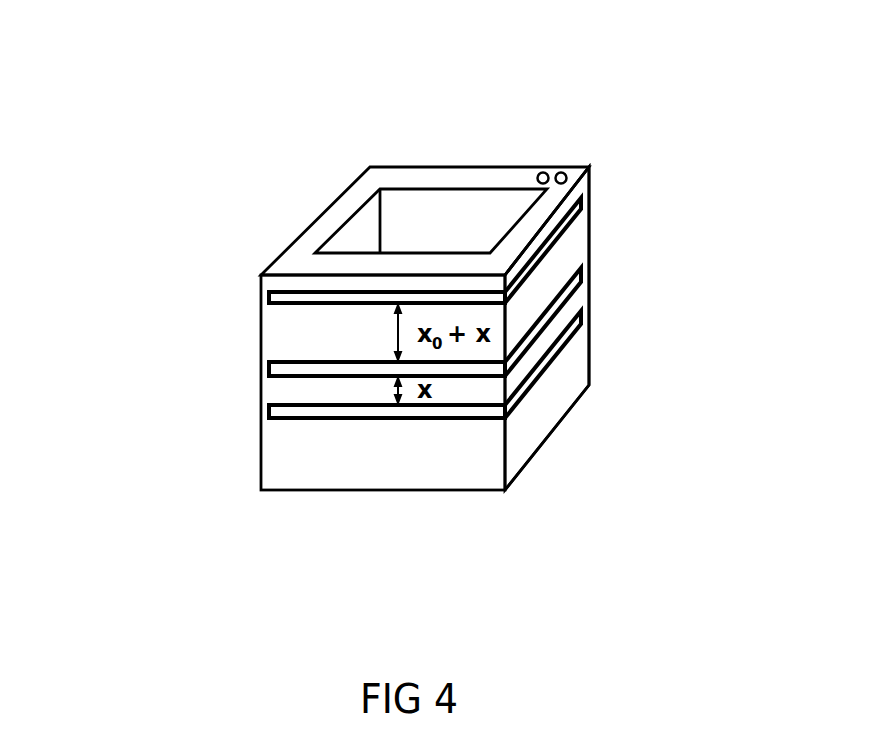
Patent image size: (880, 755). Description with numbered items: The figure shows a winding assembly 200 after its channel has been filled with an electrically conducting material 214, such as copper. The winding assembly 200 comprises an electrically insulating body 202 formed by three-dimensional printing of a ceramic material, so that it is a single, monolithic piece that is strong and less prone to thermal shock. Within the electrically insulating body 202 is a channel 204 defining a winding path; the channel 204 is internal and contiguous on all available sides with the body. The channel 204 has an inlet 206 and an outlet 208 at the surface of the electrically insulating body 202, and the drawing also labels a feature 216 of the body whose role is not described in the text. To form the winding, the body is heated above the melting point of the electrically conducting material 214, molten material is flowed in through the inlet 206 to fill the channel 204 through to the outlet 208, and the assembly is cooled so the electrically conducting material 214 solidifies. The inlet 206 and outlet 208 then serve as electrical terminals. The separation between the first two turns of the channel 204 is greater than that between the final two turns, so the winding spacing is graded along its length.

The winding assembly 200 is at (178, 137).
The electrically insulating body 202 is at (260, 430).
The channel 204 is at (585, 307).
The inlet 206 is at (542, 172).
The outlet 208 is at (565, 173).
The electrically conducting material 214 is at (575, 383).
The cavity opening 216 is at (397, 223).